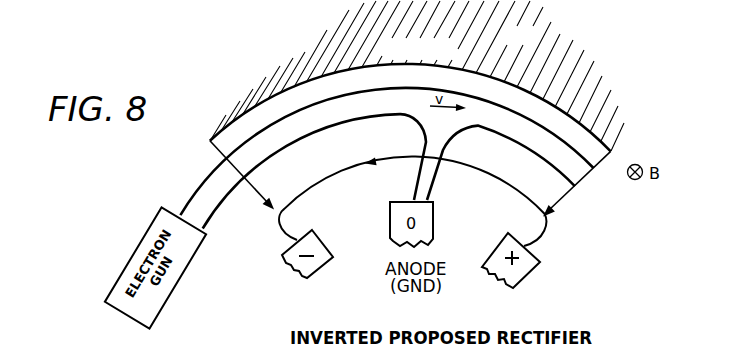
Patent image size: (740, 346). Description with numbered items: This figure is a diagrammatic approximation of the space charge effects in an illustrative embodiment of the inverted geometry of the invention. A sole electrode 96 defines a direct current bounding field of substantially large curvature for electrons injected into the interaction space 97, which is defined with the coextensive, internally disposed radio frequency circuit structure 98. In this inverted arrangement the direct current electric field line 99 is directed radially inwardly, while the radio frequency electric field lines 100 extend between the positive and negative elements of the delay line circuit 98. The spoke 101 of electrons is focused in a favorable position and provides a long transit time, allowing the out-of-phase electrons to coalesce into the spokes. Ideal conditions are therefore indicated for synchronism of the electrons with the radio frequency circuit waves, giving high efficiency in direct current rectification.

The sole electrode 96 is at (490, 73).
The interaction space 97 is at (586, 176).
The radio frequency circuit structure 98 is at (522, 298).
The direct current electric field line 99 is at (563, 201).
The radio frequency electric field lines 100 is at (494, 150).
The spoke 101 is at (439, 181).